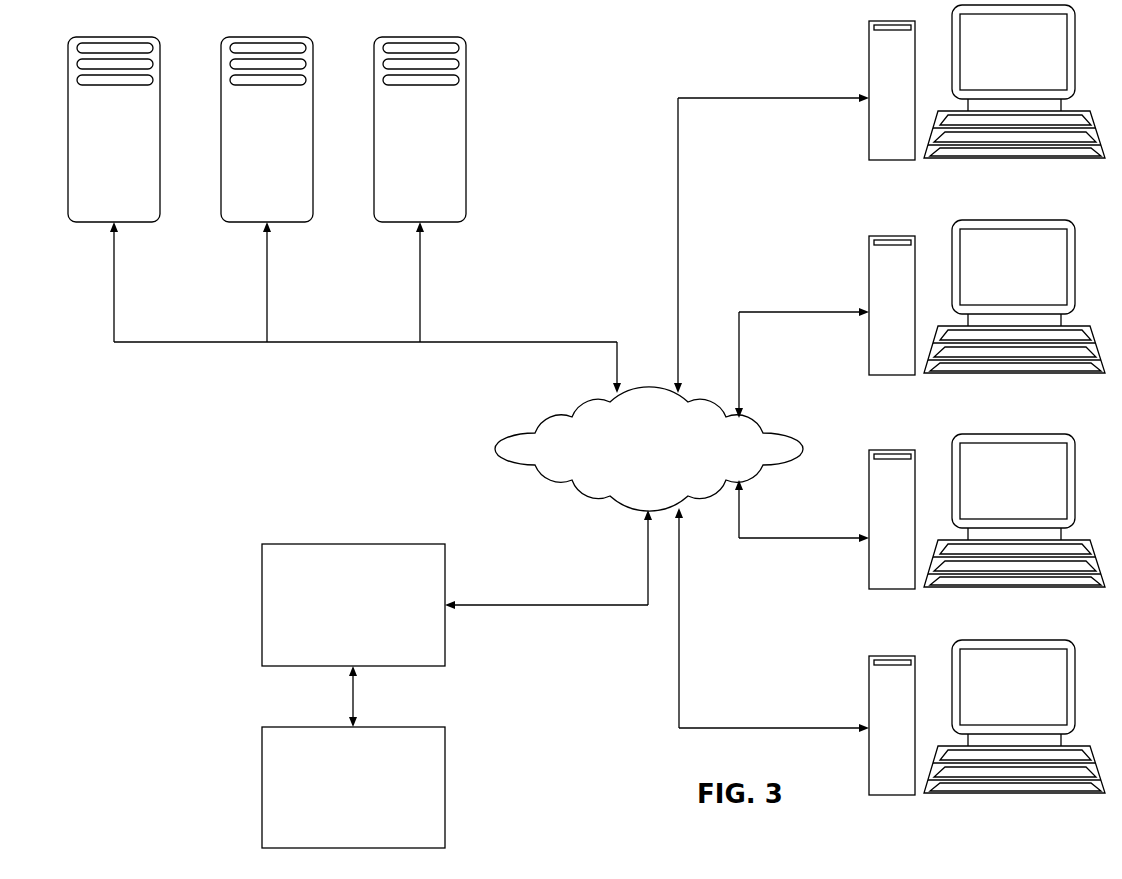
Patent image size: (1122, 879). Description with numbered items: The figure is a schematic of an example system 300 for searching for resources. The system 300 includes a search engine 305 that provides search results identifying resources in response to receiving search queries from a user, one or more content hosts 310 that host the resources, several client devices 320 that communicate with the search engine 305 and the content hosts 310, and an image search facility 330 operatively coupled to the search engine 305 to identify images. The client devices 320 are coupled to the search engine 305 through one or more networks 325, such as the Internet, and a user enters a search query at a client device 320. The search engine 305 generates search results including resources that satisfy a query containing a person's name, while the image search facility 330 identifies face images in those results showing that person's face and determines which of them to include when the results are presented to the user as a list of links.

The system 300 is at (566, 63).
The search engine 305 is at (338, 625).
The content hosts 310 is at (99, 138).
The client devices 320 is at (893, 160).
The network 325 is at (570, 481).
The image search facility 330 is at (338, 821).